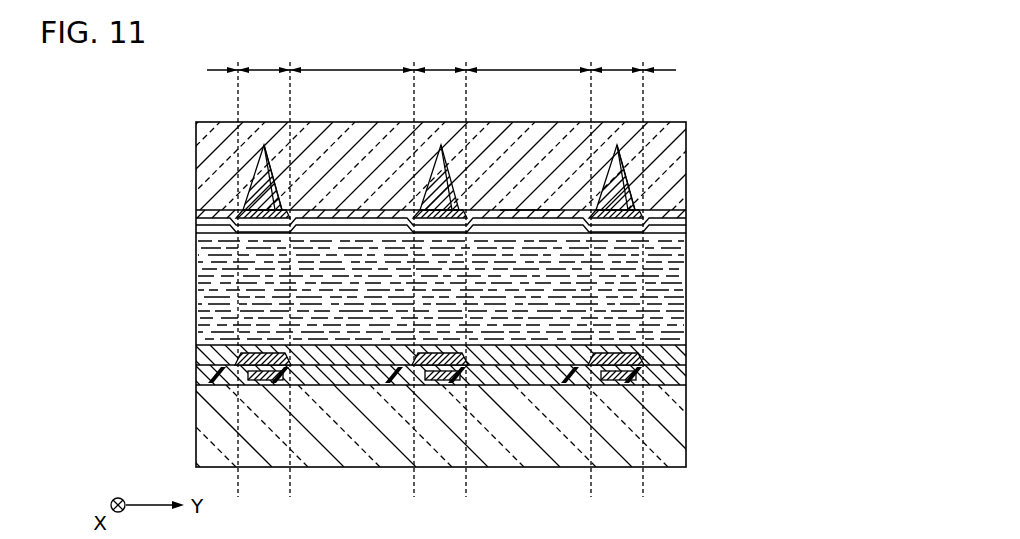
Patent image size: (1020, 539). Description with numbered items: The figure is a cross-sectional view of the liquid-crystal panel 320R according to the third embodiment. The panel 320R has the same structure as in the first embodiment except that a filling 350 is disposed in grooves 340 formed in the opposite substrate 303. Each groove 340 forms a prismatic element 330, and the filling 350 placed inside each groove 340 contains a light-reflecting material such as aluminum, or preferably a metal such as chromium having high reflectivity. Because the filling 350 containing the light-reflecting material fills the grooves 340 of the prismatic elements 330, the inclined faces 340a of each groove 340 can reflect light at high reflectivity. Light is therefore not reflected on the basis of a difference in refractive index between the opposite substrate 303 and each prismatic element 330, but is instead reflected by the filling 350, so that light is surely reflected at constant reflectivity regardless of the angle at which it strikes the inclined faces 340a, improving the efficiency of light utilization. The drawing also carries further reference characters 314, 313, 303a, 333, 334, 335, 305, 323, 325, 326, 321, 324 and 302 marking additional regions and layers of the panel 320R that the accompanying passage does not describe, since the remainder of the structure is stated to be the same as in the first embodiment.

The liquid-crystal panel 320R is at (709, 80).
The light-shielding region width 314 is at (262, 68).
The pixel aperture region width 313 is at (352, 68).
The opposite substrate 303 is at (671, 148).
The surface of counter substrate 303a is at (532, 210).
The color filter / light shielding layer 333 is at (668, 192).
The common electrode 334 is at (673, 217).
The alignment film 335 is at (673, 228).
The prismatic element 330 is at (240, 160).
The groove 340 is at (253, 192).
The inclined face 340a is at (291, 195).
The filling 350 is at (643, 190).
The liquid crystal layer 305 is at (202, 297).
The pixel electrode layer 323 is at (650, 346).
The relay electrode 325 is at (200, 360).
The contact hole 326 is at (200, 376).
The insulating layer 321 is at (645, 370).
The wiring layer 324 is at (325, 386).
The element substrate 302 is at (660, 420).